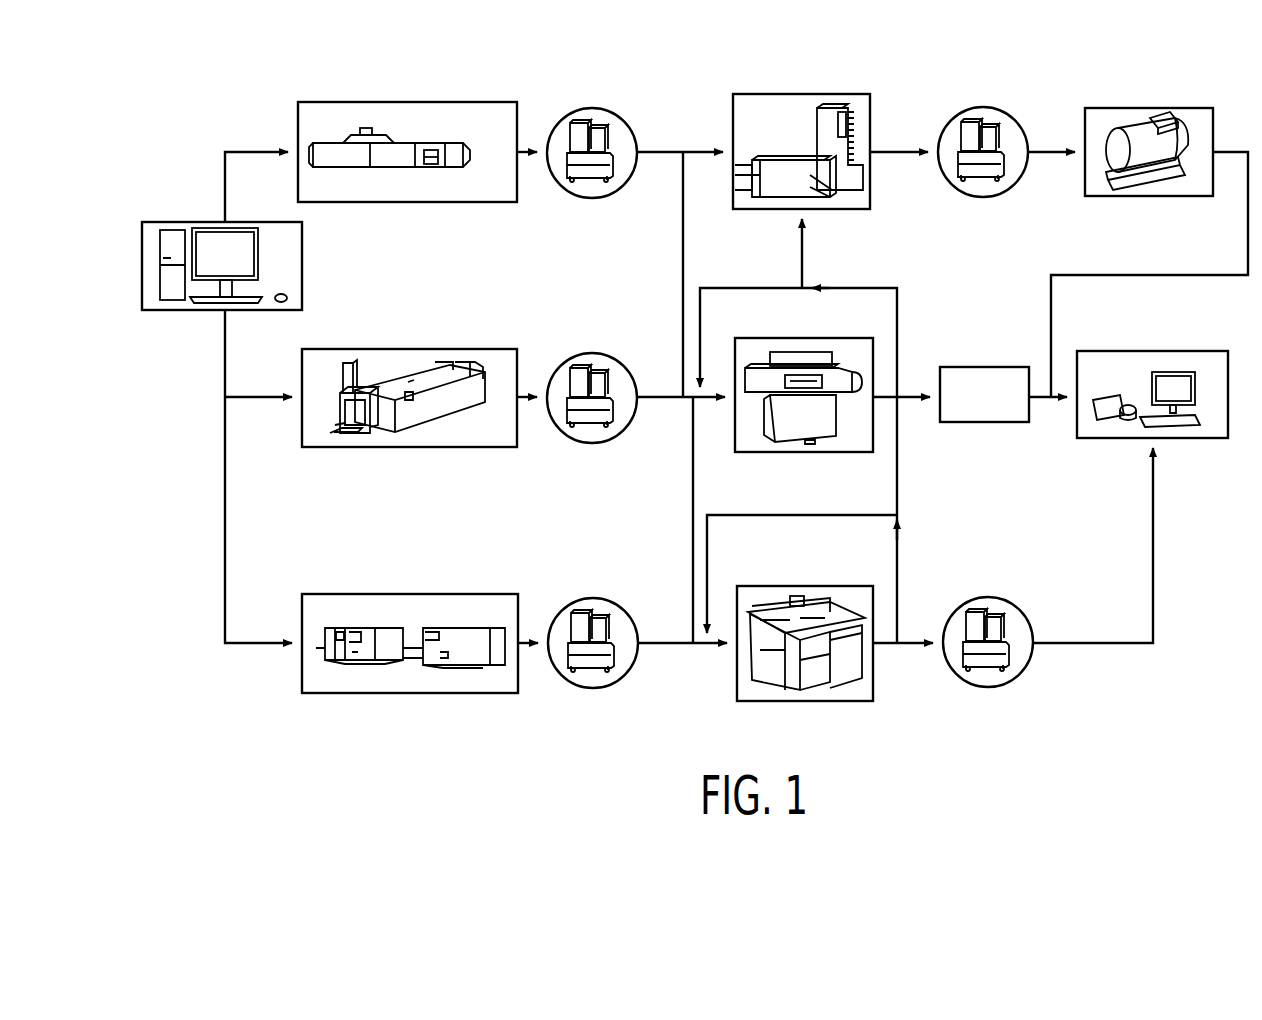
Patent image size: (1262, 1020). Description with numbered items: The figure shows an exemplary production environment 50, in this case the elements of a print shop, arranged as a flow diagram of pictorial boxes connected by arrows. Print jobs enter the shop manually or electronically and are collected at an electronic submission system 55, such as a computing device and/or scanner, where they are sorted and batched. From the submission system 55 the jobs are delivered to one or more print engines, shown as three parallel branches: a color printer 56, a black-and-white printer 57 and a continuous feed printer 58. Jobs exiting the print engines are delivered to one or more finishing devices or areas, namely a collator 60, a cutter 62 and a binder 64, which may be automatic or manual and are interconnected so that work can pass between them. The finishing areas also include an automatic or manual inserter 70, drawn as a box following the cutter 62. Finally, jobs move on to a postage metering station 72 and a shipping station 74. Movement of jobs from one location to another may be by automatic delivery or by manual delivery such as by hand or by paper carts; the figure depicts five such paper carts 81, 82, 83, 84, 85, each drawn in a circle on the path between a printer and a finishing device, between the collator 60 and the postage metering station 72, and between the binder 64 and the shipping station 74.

The production environment 50 is at (246, 86).
The electronic submission system 55 is at (178, 310).
The color printer 56 is at (427, 202).
The black-and-white printer 57 is at (427, 447).
The continuous feed printer 58 is at (428, 693).
The collator 60 is at (812, 210).
The cutter 62 is at (812, 453).
The binder 64 is at (815, 702).
The inserter 70 is at (985, 422).
The postage metering station 72 is at (1143, 196).
The shipping station 74 is at (1180, 438).
The paper cart 81 is at (590, 197).
The paper cart 82 is at (592, 443).
The paper cart 83 is at (593, 688).
The paper cart 84 is at (985, 197).
The paper cart 85 is at (987, 687).